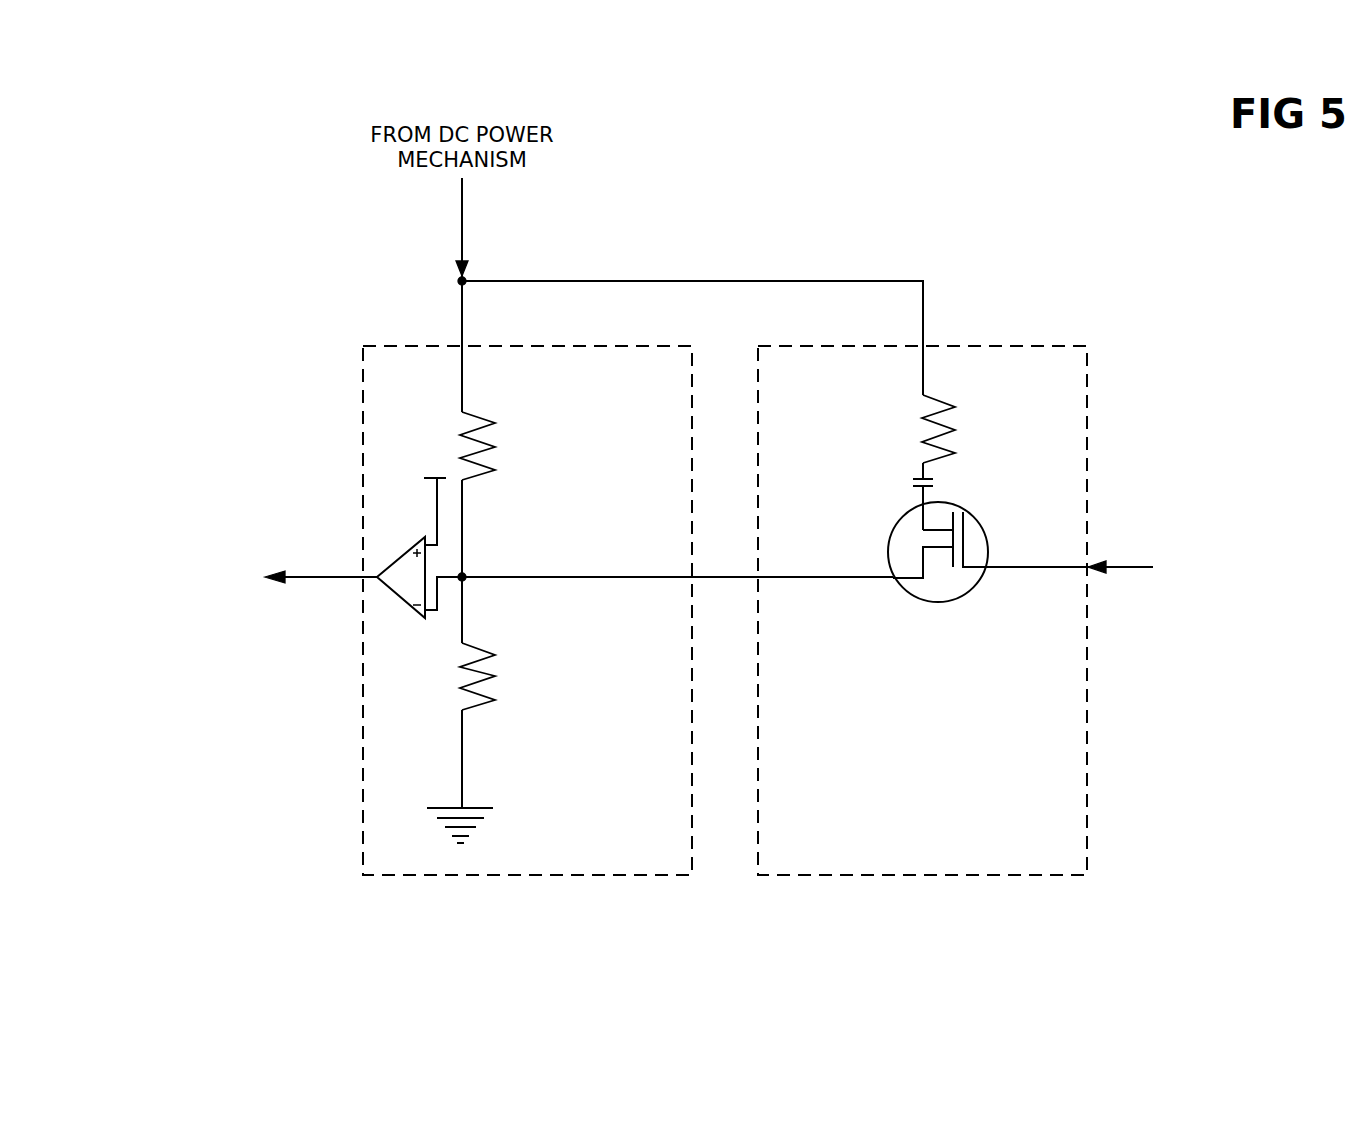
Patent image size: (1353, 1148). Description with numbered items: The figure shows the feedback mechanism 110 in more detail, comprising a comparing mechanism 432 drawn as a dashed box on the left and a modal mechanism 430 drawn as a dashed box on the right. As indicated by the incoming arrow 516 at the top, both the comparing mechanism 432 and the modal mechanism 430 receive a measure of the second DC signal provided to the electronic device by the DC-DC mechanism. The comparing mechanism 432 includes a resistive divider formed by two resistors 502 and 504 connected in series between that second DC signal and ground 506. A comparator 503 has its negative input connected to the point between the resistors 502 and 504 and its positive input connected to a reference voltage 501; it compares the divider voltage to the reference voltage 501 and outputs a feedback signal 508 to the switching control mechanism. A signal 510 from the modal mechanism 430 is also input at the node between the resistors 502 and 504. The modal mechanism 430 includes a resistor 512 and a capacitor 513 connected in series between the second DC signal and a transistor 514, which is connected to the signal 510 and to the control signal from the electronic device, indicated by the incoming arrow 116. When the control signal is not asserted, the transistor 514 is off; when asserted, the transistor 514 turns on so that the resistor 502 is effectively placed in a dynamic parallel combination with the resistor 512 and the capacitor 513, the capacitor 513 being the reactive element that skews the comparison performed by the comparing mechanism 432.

The feedback mechanism 110 is at (1202, 292).
The incoming arrow 116 is at (1124, 567).
The modal mechanism 430 is at (1079, 377).
The comparing mechanism 432 is at (684, 377).
The reference voltage 501 is at (424, 477).
The resistor 502 is at (498, 440).
The comparator 503 is at (430, 612).
The resistor 504 is at (498, 675).
The ground 506 is at (515, 765).
The feedback signal 508 is at (336, 577).
The signal 510 is at (734, 578).
The resistor 512 is at (926, 430).
The capacitor 513 is at (916, 483).
The transistor 514 is at (1010, 483).
The incoming arrow 516 is at (462, 228).